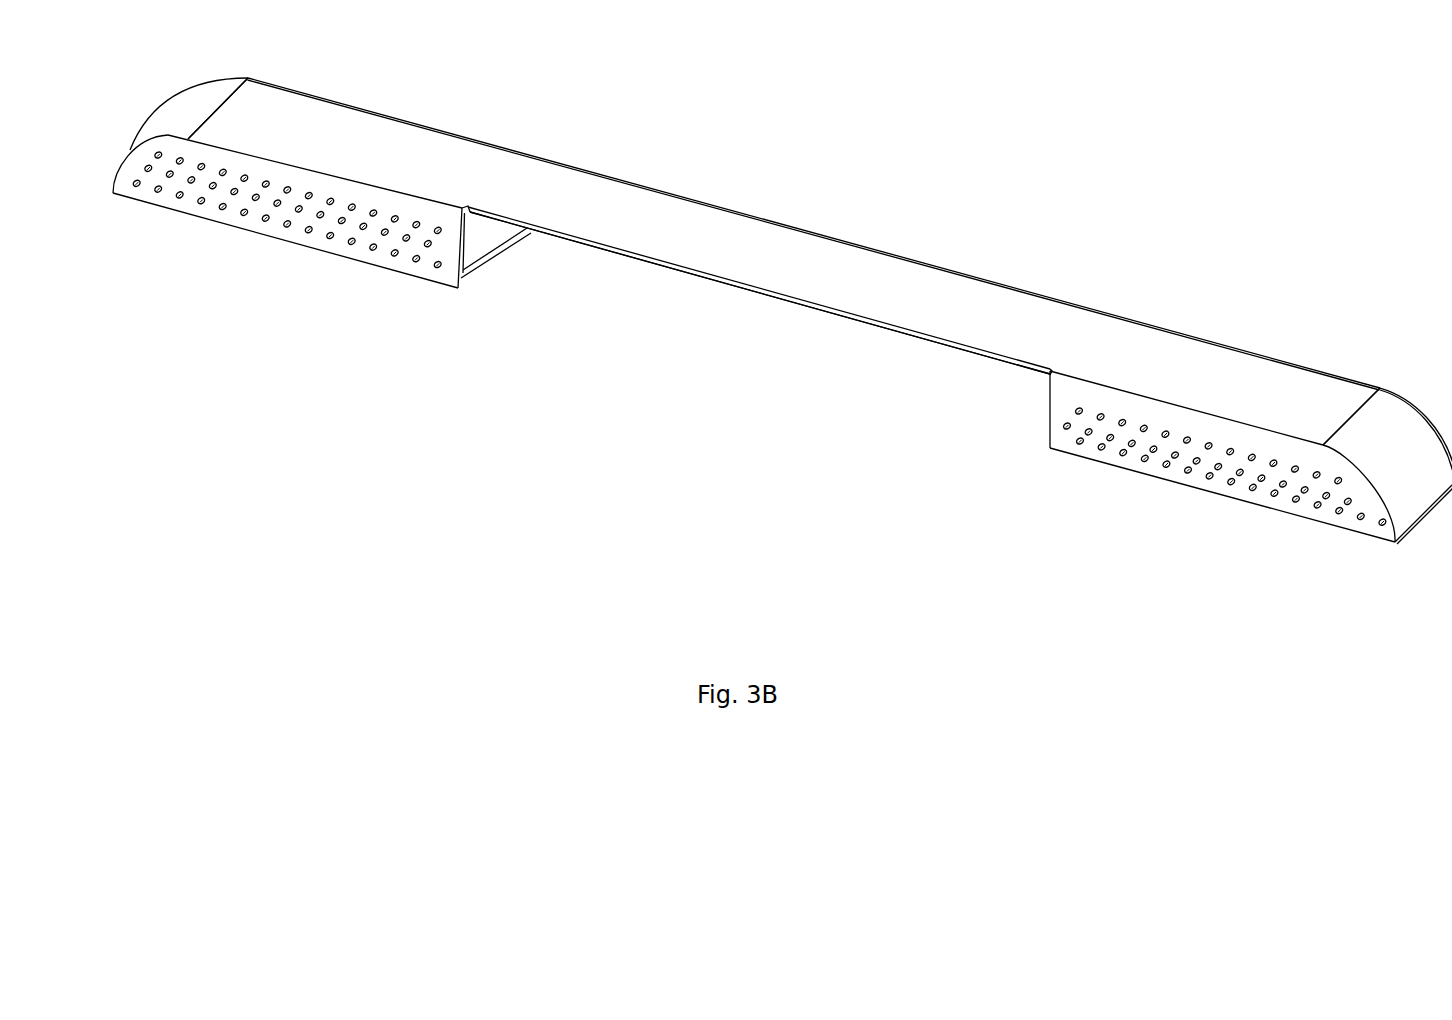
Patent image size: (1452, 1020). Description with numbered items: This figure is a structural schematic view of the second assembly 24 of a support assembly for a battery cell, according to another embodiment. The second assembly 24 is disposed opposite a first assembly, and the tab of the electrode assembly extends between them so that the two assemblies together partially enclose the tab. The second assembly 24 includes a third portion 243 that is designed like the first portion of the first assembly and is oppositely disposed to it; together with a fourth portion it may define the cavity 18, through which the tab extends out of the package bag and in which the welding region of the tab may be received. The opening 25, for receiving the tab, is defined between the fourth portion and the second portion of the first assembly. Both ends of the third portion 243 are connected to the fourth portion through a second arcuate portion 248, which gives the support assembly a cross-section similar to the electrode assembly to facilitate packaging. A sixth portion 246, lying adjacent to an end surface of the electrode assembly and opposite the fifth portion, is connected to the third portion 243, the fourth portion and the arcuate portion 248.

The second assembly 24 is at (813, 189).
The third portion 243 is at (377, 145).
The sixth portion 246 is at (348, 225).
The second arcuate portion 248 is at (1413, 470).
The opening 25 is at (490, 250).
The cavity 18 is at (739, 327).